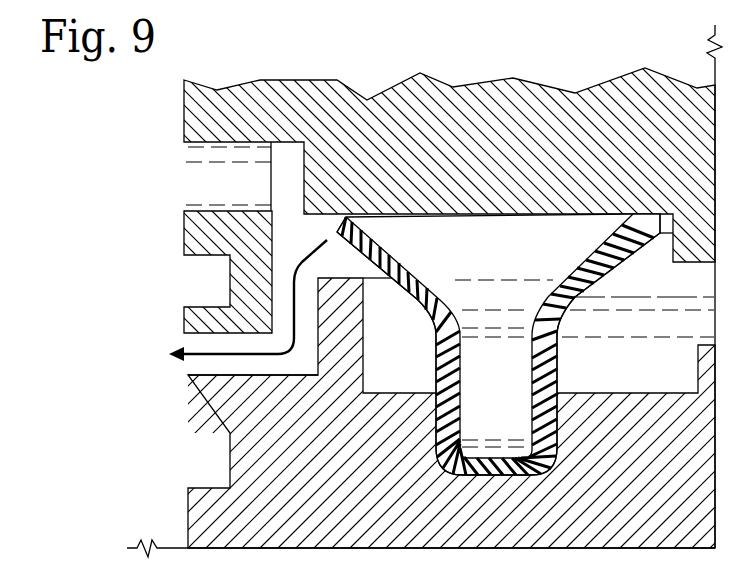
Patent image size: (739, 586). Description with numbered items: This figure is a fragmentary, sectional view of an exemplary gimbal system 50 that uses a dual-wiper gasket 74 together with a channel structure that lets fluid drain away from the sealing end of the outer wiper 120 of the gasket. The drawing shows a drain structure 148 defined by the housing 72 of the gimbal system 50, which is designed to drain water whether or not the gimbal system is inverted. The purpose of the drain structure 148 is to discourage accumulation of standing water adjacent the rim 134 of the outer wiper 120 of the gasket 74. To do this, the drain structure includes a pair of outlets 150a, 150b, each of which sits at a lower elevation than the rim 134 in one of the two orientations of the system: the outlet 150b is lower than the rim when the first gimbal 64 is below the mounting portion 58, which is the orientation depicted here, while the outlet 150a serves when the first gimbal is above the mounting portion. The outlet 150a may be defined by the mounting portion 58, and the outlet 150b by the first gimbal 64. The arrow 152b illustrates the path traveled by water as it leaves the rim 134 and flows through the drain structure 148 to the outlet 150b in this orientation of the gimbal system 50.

The gimbal system 50 is at (84, 138).
The mounting portion 58 is at (183, 117).
The first gimbal 64 is at (187, 515).
The housing 72 is at (152, 258).
The gasket 74 is at (557, 374).
The outer wiper 120 is at (410, 258).
The rim 134 is at (350, 217).
The drain structure 148 is at (166, 177).
The outlet 150a is at (208, 203).
The outlet 150b is at (216, 377).
The arrow 152b is at (213, 350).